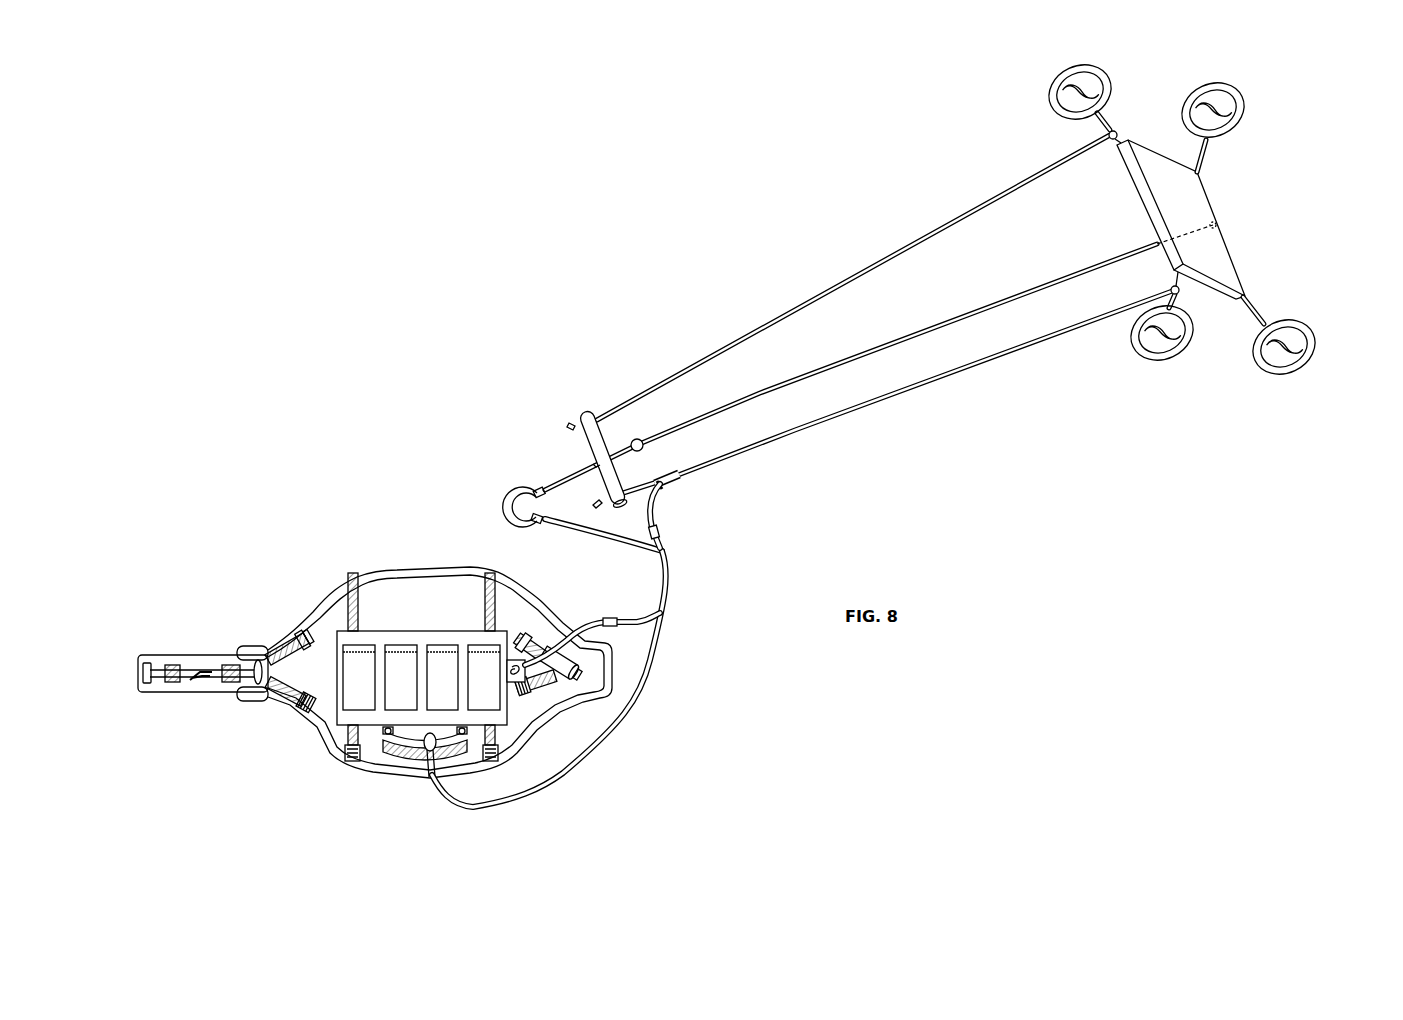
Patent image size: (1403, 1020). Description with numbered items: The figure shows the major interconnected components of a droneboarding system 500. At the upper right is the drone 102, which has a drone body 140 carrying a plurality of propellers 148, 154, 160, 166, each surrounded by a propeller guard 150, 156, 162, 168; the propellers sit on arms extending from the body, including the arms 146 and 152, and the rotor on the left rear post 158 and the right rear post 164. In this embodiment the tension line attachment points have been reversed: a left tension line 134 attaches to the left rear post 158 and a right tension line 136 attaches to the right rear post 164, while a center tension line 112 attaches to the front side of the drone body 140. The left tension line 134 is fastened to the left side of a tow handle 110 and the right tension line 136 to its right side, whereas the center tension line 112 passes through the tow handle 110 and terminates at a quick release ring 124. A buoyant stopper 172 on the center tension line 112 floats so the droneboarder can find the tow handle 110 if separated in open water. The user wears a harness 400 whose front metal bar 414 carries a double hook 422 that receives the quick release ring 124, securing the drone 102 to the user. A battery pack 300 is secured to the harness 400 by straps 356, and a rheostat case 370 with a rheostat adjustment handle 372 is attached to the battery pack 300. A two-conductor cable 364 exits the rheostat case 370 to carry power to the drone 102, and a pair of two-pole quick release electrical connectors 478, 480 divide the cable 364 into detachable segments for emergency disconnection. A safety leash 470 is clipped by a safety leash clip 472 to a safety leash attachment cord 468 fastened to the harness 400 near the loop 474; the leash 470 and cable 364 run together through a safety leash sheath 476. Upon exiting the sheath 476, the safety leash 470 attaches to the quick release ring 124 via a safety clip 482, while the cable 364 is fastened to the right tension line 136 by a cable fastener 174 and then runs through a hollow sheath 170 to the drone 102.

The drone 102 is at (1250, 433).
The tow handle 110 is at (592, 410).
The center tension line 112 is at (950, 325).
The quick release ring 124 is at (505, 490).
The left tension line 134 is at (808, 292).
The right tension line 136 is at (655, 478).
The drone body 140 is at (1120, 170).
The rotor arm 146 is at (1210, 170).
The propeller 148 is at (1222, 98).
The propeller guard 150 is at (1196, 85).
The rotor arm 152 is at (1255, 292).
The propeller 154 is at (1290, 330).
The propeller guard 156 is at (1312, 355).
The left rear post 158 is at (1098, 128).
The propeller 160 is at (1065, 80).
The propeller guard 162 is at (1085, 75).
The right rear post 164 is at (1170, 288).
The propeller 166 is at (1158, 360).
The propeller guard 168 is at (1178, 360).
The hollow sheath 170 is at (938, 392).
The buoyant stopper 172 is at (640, 438).
The cable fastener 174 is at (668, 483).
The battery pack 300 is at (390, 630).
The straps 356 is at (488, 575).
The two-conductor cable 364 is at (655, 505).
The rheostat case 370 is at (520, 640).
The rheostat adjustment handle 372 is at (508, 660).
The harness 400 is at (320, 600).
The metal bar 414 is at (190, 660).
The double hook 422 is at (195, 680).
The safety leash attachment cord 468 is at (390, 745).
The safety leash 470 is at (580, 530).
The safety leash clip 472 is at (415, 758).
The hook loop 474 is at (432, 780).
The safety leash sheath 476 is at (668, 590).
The two-pole quick release electrical connector 478 is at (660, 535).
The two-pole quick release electrical connector 480 is at (612, 618).
The safety clip 482 is at (535, 520).
The droneboarding system 500 is at (644, 179).